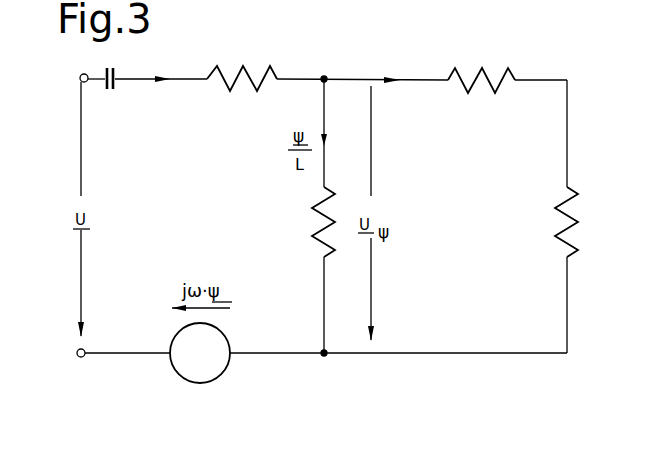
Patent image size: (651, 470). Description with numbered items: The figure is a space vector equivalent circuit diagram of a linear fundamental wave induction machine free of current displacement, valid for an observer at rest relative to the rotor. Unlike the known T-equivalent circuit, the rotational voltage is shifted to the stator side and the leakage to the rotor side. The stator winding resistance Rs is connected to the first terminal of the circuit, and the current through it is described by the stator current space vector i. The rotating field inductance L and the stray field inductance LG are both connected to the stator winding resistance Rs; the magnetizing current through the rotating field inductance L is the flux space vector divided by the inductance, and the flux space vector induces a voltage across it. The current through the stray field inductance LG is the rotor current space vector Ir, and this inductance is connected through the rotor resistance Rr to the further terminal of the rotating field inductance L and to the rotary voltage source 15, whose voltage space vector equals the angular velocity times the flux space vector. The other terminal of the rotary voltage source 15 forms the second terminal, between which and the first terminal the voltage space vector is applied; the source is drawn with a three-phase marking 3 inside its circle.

The rotary voltage source 15 is at (215, 353).
The three-phase marking of source 3 is at (199, 358).
The stator winding resistance Rs is at (242, 92).
The rotating field inductance L is at (313, 222).
The stray field inductance LG is at (481, 97).
The rotor resistance Rr is at (553, 222).
The stator current space vector i is at (170, 104).
The rotor current space vector Ir is at (402, 105).